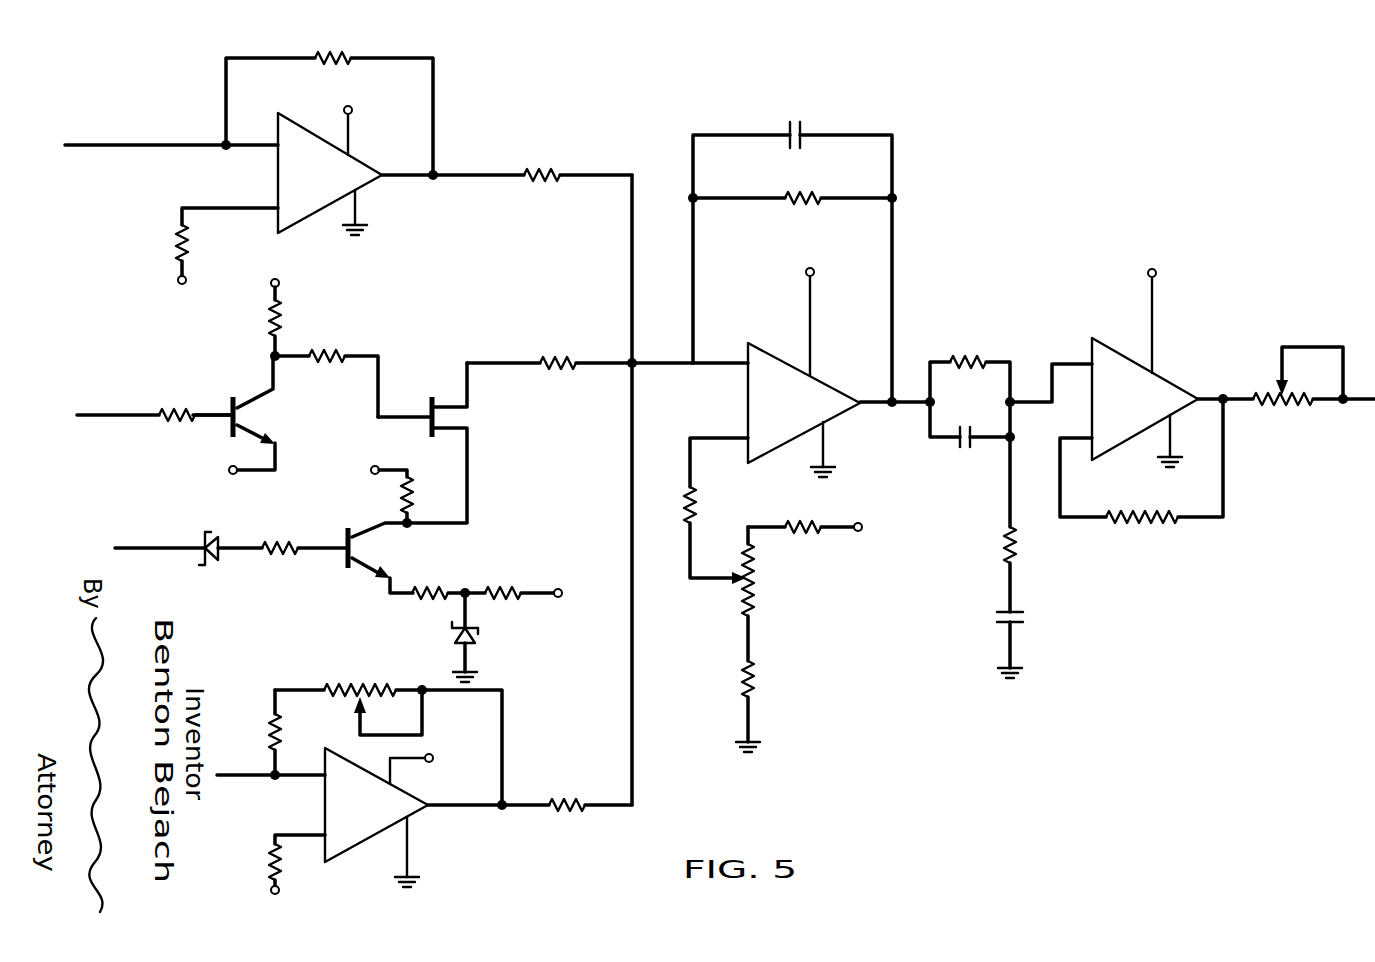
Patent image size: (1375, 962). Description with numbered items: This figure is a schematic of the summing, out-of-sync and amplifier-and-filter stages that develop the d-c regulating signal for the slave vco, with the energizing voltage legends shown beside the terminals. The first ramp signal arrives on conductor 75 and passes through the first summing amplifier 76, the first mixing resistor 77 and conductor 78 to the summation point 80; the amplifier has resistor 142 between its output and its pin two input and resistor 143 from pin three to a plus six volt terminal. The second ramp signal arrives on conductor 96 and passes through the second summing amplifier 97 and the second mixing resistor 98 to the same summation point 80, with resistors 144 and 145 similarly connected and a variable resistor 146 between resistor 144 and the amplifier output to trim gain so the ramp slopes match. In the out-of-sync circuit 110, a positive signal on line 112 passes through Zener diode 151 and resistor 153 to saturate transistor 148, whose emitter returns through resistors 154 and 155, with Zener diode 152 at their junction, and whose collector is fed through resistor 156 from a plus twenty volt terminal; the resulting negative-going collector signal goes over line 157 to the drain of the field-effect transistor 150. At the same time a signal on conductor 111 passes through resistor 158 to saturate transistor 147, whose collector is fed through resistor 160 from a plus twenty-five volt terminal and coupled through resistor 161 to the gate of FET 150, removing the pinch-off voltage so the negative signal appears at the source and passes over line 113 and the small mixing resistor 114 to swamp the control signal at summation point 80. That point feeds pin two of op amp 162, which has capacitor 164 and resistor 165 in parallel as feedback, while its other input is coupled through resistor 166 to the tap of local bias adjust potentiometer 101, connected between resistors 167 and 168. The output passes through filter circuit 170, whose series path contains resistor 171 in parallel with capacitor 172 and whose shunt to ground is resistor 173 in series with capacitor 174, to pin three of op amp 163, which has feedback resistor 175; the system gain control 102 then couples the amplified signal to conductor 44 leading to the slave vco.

The conductor 44 is at (1367, 402).
The conductor 75 is at (175, 145).
The first summing amplifier 76 is at (319, 157).
The first mixing resistor 77 is at (507, 162).
The conductor 78 is at (632, 675).
The summation point 80 is at (636, 363).
The conductor 96 is at (232, 778).
The second summing amplifier 97 is at (399, 817).
The second mixing resistor 98 is at (530, 792).
The local bias adjust potentiometer 101 is at (773, 594).
The system gain control 102 is at (1300, 391).
The out-of-sync circuit 110 is at (300, 430).
The conductor 111 is at (125, 412).
The line 112 is at (170, 545).
The line 113 is at (490, 363).
The mixing resistor 114 is at (583, 350).
The resistor 142 is at (329, 100).
The resistor 143 is at (202, 259).
The resistor 144 is at (251, 735).
The resistor 145 is at (273, 869).
The variable resistor 146 is at (388, 730).
The transistor 147 is at (229, 419).
The transistor 148 is at (371, 546).
The field-effect transistor 150 is at (422, 442).
The Zener diode 151 is at (199, 566).
The Zener diode 152 is at (478, 630).
The resistor 153 is at (282, 534).
The resistor 154 is at (436, 580).
The resistor 155 is at (541, 583).
The resistor 156 is at (386, 493).
The line 157 is at (470, 466).
The resistor 158 is at (192, 401).
The resistor 160 is at (260, 306).
The resistor 161 is at (324, 371).
The op amp 162 is at (795, 359).
The op amp 163 is at (1163, 356).
The capacitor 164 is at (792, 250).
The resistor 165 is at (792, 184).
The resistor 166 is at (716, 511).
The resistor 167 is at (835, 518).
The resistor 168 is at (771, 706).
The filter circuit 170 is at (980, 508).
The resistor 171 is at (968, 348).
The capacitor 172 is at (966, 423).
The resistor 173 is at (1035, 524).
The capacitor 174 is at (1035, 641).
The feedback resistor 175 is at (1141, 475).